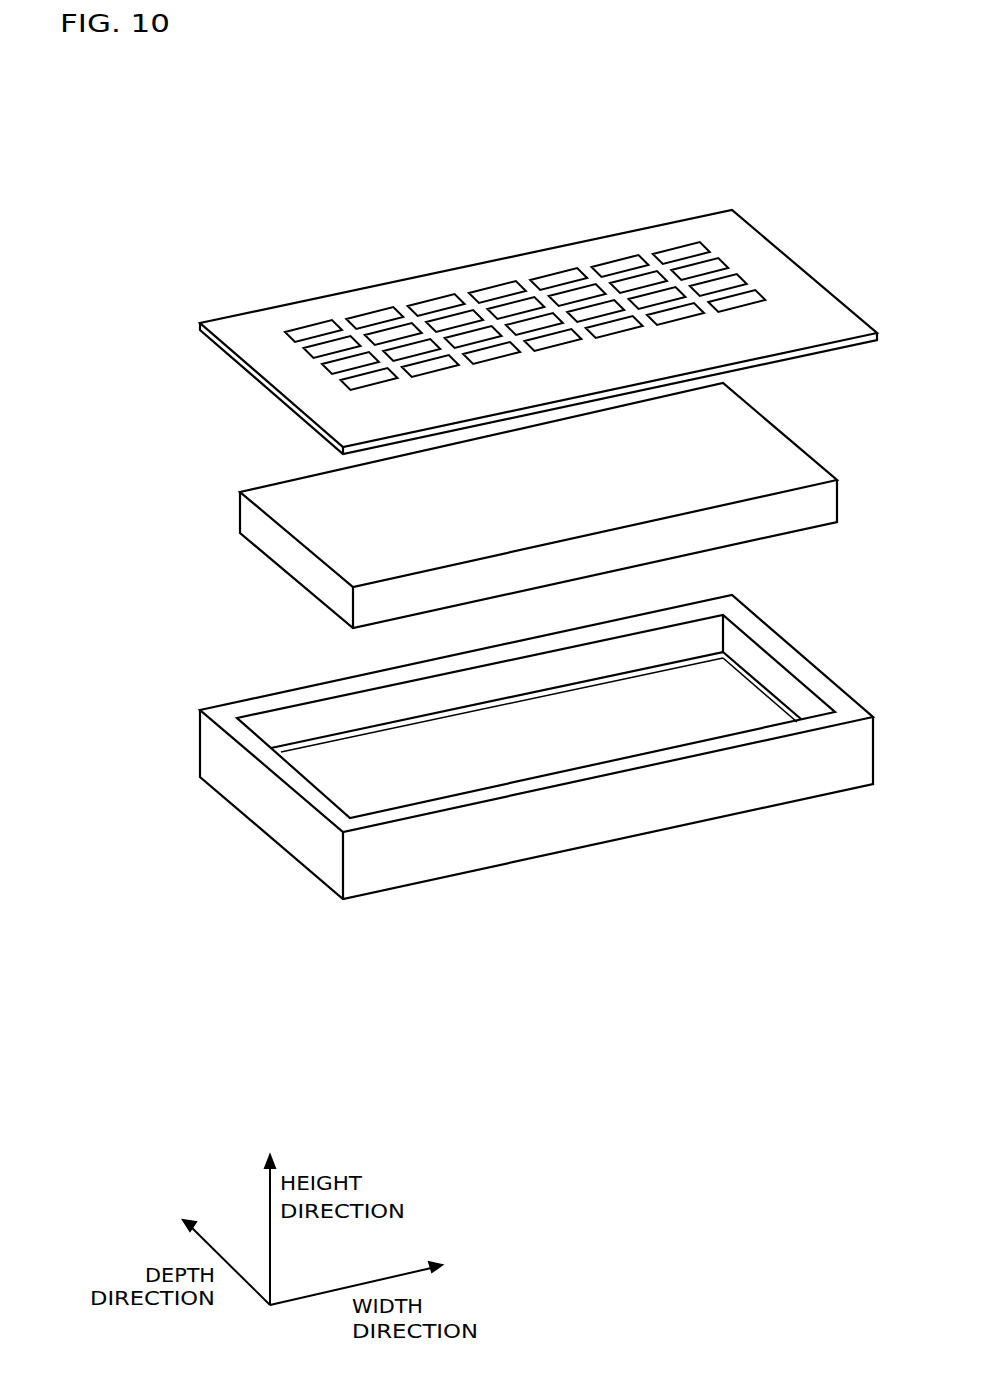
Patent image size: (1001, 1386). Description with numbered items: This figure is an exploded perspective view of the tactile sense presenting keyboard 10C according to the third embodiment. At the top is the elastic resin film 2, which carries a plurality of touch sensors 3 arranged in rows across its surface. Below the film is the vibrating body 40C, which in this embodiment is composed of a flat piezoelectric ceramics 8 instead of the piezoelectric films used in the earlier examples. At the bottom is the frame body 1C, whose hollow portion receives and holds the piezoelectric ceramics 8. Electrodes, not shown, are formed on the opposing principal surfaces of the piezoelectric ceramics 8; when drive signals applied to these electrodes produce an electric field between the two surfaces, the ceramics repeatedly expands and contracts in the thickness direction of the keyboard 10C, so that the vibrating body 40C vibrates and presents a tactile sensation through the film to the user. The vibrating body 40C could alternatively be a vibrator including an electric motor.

The tactile sense presenting keyboard 10C is at (765, 125).
The elastic resin film 2 is at (852, 330).
The touch sensors 3 is at (563, 267).
The piezoelectric ceramics 8 is at (815, 470).
The vibrating body 40C is at (257, 554).
The frame body 1C is at (858, 705).